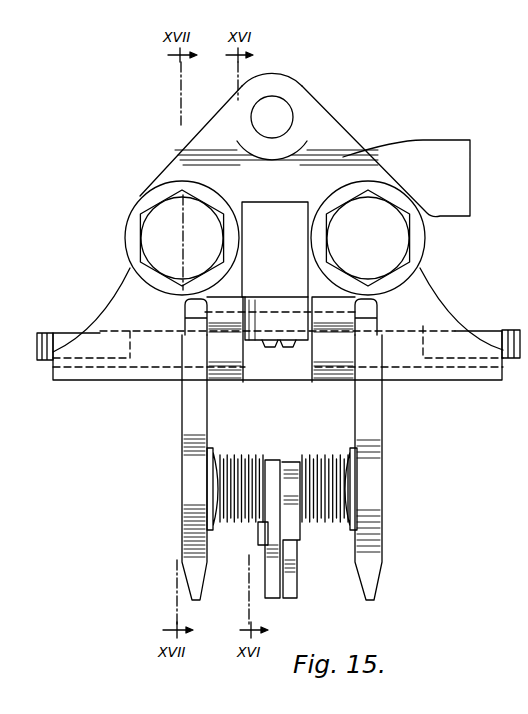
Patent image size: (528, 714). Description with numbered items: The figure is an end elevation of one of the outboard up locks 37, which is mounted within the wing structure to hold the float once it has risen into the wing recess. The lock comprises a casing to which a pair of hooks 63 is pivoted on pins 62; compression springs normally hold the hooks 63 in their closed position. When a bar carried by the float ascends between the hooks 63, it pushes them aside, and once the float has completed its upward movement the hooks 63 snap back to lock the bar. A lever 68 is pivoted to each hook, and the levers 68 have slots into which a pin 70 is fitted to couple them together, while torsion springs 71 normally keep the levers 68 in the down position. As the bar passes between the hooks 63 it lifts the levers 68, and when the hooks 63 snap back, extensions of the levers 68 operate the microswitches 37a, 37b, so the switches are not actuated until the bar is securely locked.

The outboard up lock 37 is at (373, 143).
The microswitch 37a is at (269, 348).
The microswitch 37b is at (284, 348).
The pins 62 is at (410, 335).
The hooks 63 is at (182, 486).
The lever 68 is at (286, 575).
The pin 70 is at (262, 531).
The torsion springs 71 is at (318, 460).